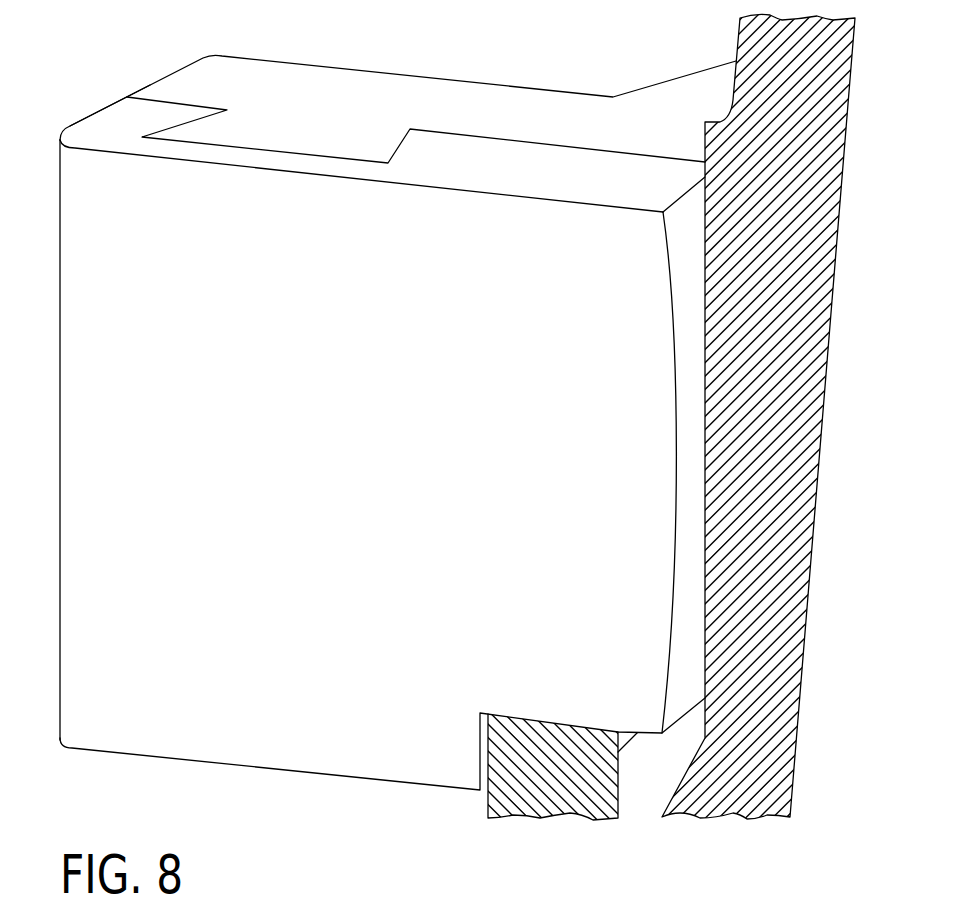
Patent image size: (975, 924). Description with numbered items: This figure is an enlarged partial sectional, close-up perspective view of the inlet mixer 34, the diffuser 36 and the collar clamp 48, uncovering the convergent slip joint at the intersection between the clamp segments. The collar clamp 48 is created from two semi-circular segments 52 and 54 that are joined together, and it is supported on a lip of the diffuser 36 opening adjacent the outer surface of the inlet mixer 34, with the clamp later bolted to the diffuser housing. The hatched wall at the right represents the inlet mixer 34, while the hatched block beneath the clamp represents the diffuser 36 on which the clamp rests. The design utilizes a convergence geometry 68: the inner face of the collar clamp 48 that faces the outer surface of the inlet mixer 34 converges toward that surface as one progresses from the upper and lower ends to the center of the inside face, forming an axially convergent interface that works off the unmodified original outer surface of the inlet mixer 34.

The inlet mixer 34 is at (775, 55).
The diffuser 36 is at (533, 785).
The collar clamp 48 is at (168, 75).
The semi-circular segment 52 is at (556, 188).
The semi-circular segment 54 is at (413, 72).
The convergence geometry 68 is at (672, 639).